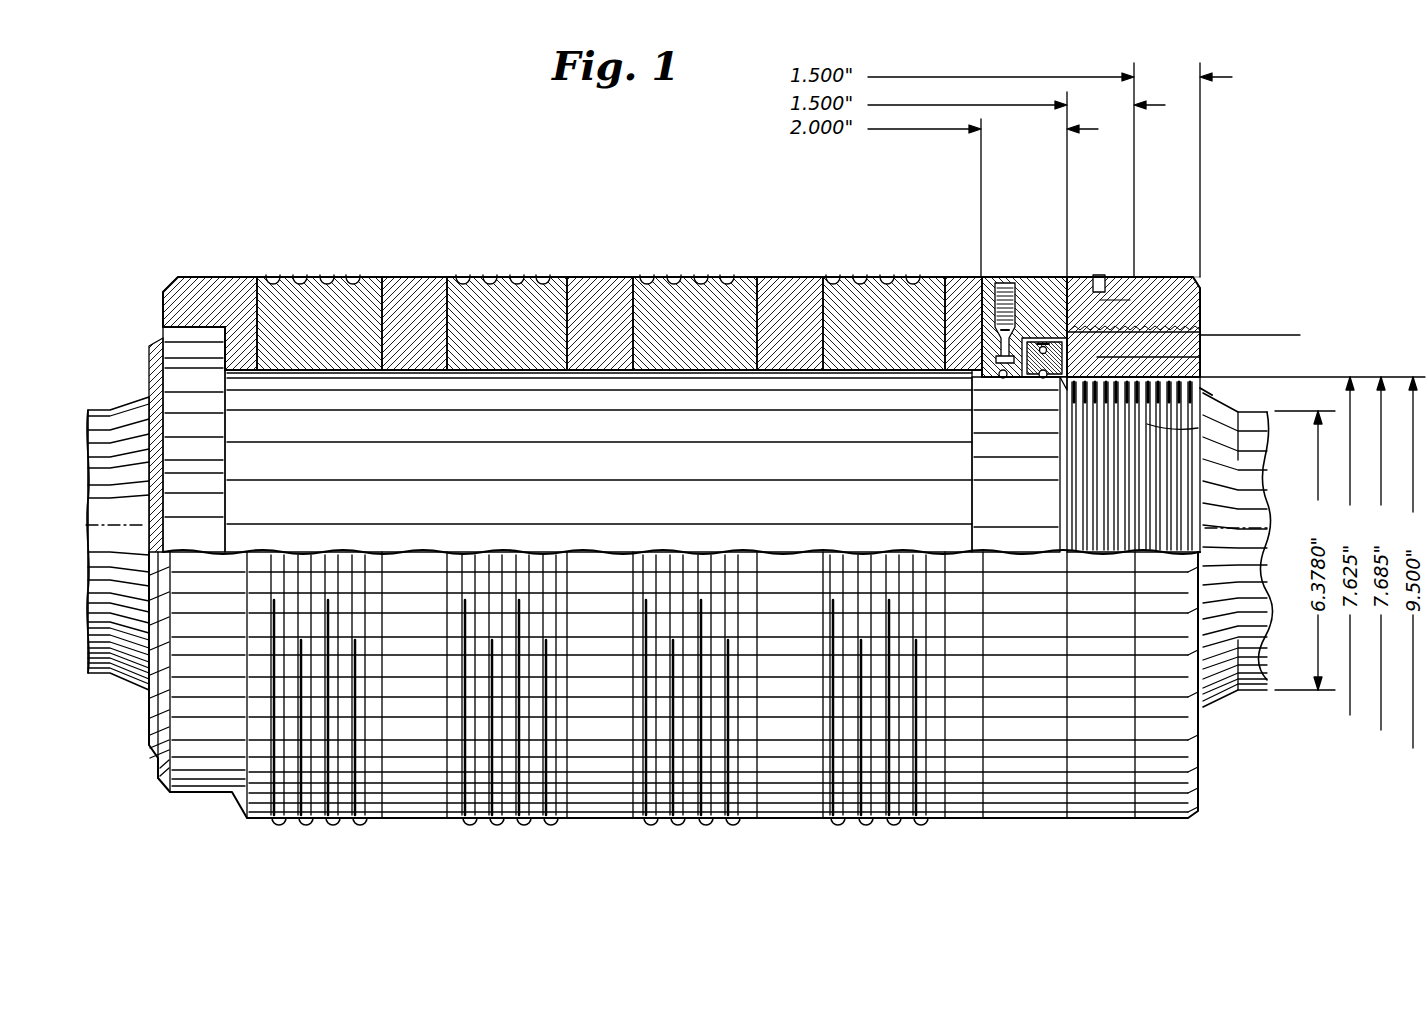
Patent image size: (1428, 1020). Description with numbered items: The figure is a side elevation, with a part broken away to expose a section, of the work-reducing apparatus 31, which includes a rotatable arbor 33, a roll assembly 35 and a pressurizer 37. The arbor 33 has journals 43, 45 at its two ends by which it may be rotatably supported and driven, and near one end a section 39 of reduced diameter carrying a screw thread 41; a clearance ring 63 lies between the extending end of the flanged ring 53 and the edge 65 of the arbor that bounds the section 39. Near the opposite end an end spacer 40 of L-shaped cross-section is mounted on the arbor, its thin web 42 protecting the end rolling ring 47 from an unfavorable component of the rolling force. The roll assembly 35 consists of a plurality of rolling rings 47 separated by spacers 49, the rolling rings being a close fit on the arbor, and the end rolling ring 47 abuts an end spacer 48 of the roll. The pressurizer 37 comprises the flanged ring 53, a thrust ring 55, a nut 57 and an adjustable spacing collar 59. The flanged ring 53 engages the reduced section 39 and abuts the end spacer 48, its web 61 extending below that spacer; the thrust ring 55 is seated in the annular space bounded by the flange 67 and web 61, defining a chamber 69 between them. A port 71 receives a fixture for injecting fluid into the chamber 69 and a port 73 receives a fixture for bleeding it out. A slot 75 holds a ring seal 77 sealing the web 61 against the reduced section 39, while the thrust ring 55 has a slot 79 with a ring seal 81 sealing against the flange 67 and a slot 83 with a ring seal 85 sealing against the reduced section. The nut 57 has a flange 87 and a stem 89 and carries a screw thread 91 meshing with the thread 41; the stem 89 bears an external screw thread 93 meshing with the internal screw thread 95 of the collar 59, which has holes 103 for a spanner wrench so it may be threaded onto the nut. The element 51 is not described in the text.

The work-reducing apparatus 31 is at (398, 102).
The rotatable arbor 33 is at (640, 529).
The roll assembly 35 is at (519, 206).
The pressurizer 37 is at (1270, 178).
The section of reduced diameter 39 is at (1038, 536).
The end spacer 40 is at (218, 273).
The screw thread 41 is at (1155, 501).
The web 42 is at (245, 360).
The journal 43 is at (128, 406).
The journal 45 is at (1222, 692).
The rolling ring 47 is at (306, 277).
The end spacer 48 is at (962, 277).
The spacer 49 is at (415, 277).
The flange 51 is at (178, 352).
The flanged ring 53 is at (1029, 826).
The thrust ring 55 is at (1030, 277).
The nut 57 is at (1210, 302).
The adjustable spacing collar 59 is at (1083, 277).
The web 61 is at (1000, 338).
The clearance ring 63 is at (1040, 343).
The edge of the arbor 65 is at (981, 528).
The flange 67 is at (1054, 277).
The chamber 69 is at (1009, 277).
The port 71 is at (996, 277).
The port 73 is at (1005, 822).
The slot 75 is at (970, 399).
The ring seal 77 is at (1014, 380).
The slot 79 is at (966, 413).
The ring seal 81 is at (1040, 380).
The slot 83 is at (972, 436).
The ring seal 85 is at (1032, 392).
The flange 87 is at (1170, 277).
The stem 89 is at (1100, 357).
The screw thread 91 is at (1212, 413).
The external screw thread 93 is at (1136, 255).
The internal screw thread 95 is at (1146, 277).
The holes 103 is at (1100, 275).